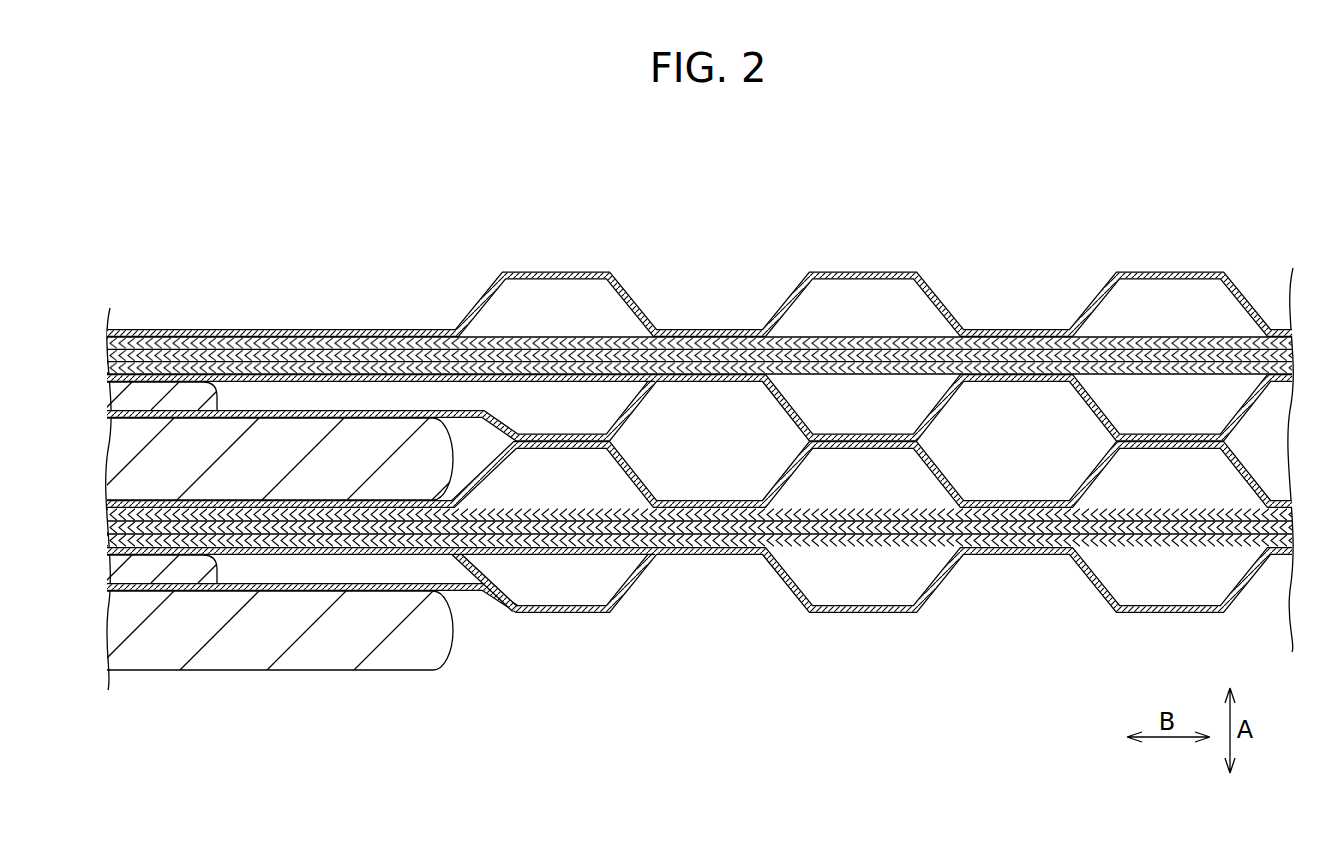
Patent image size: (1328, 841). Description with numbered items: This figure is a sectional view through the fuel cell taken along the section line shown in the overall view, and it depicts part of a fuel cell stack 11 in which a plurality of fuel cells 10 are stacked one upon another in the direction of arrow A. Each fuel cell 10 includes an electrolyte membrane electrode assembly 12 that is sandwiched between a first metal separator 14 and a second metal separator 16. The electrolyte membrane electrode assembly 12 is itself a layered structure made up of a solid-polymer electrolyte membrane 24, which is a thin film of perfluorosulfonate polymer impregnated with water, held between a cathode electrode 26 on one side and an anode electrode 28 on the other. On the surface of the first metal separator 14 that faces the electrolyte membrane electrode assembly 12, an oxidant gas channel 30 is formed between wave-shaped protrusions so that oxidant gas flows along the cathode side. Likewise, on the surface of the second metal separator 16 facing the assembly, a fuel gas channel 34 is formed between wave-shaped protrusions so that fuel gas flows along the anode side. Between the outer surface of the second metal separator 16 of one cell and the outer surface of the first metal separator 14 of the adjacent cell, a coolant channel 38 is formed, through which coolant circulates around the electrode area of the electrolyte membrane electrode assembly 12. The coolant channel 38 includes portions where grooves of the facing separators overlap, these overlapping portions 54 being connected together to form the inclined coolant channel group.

The fuel cell 10 is at (892, 155).
The fuel cell stack 11 is at (612, 117).
The electrolyte membrane electrode assembly 12 is at (699, 272).
The first metal separator 14 is at (856, 270).
The second metal separator 16 is at (1086, 391).
The solid-polymer electrolyte membrane 24 is at (987, 353).
The cathode electrode 26 is at (922, 341).
The anode electrode 28 is at (1033, 367).
The oxidant gas channel 30 is at (833, 297).
The fuel gas channel 34 is at (803, 393).
The coolant channel 38 is at (705, 408).
The overlapping portions 54 is at (287, 462).